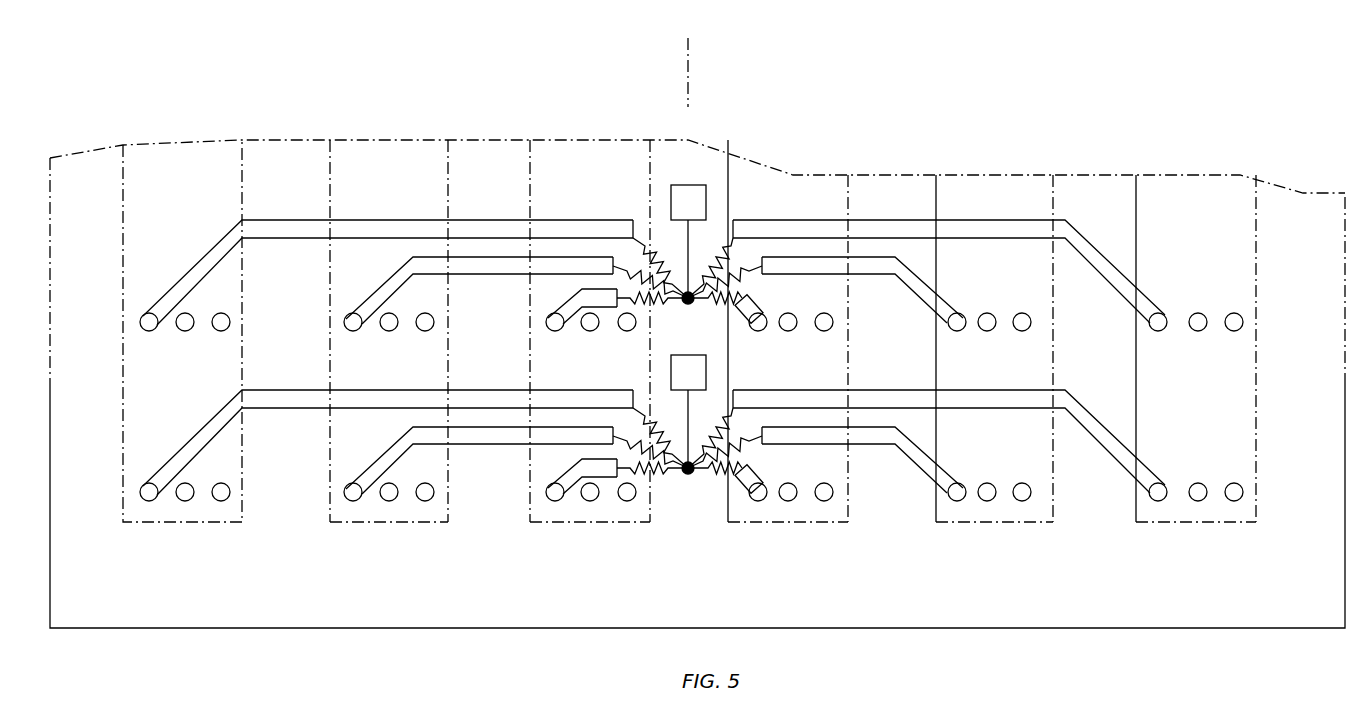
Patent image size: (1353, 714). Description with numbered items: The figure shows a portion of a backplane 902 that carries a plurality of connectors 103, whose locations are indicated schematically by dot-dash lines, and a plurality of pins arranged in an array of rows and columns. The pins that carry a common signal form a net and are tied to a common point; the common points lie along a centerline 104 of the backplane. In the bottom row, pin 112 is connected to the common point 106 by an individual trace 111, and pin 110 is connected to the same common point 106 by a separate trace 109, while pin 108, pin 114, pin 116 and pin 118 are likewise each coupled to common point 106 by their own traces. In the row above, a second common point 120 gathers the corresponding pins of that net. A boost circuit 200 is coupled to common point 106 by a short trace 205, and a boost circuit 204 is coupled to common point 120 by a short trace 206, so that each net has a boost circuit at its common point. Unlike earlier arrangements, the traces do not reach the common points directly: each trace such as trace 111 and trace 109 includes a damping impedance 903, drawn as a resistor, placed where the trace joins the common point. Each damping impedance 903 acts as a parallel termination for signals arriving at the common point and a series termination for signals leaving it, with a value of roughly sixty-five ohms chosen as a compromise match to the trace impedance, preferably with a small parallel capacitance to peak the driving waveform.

The connector 103 is at (177, 160).
The centerline 104 is at (689, 53).
The common point 106 is at (688, 474).
The pin 108 is at (555, 501).
The trace 109 is at (512, 444).
The pin 110 is at (353, 501).
The trace 111 is at (295, 408).
The pin 112 is at (149, 501).
The pin 114 is at (758, 501).
The pin 116 is at (958, 501).
The pin 118 is at (1158, 501).
The common point 120 is at (688, 298).
The boost circuit 200 is at (707, 373).
The boost circuit 204 is at (697, 185).
The short trace 205 is at (688, 403).
The short trace 206 is at (687, 262).
The backplane 902 is at (507, 157).
The damping impedance 903 is at (658, 305).